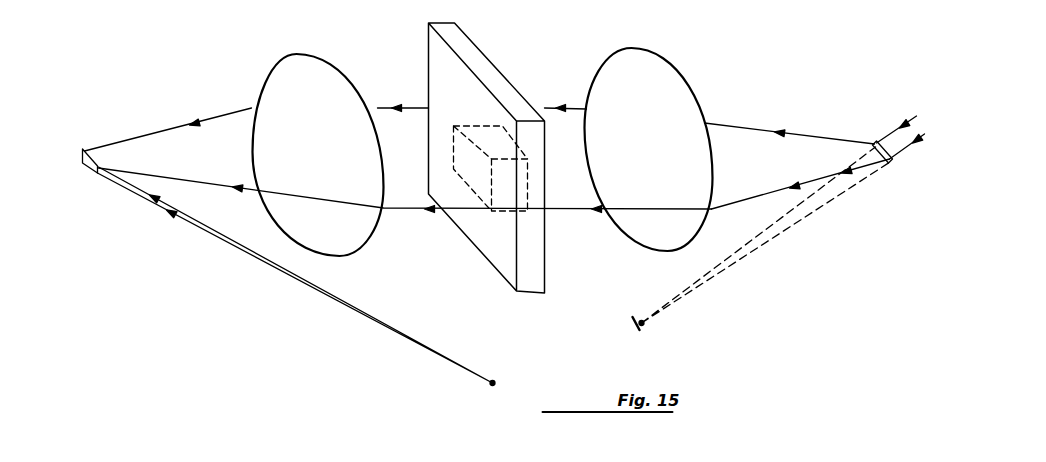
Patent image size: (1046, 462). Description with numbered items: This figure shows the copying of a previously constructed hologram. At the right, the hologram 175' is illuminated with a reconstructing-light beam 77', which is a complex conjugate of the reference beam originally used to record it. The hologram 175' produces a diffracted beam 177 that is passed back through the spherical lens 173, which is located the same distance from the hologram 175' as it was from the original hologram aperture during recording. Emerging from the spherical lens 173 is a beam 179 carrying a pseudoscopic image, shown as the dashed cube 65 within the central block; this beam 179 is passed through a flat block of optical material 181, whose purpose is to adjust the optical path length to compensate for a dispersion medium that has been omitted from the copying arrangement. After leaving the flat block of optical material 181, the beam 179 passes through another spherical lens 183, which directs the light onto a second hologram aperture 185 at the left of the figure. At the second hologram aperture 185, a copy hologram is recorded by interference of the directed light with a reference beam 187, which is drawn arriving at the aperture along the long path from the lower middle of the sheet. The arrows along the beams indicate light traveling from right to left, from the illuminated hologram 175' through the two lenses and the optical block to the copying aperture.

The spherical lens 173 is at (672, 88).
The diffracted beam 177 is at (742, 135).
The beam 179 is at (572, 117).
The flat block of optical material 181 is at (485, 68).
The spherical lens 183 is at (277, 82).
The second hologram aperture 185 is at (85, 147).
The reference beam 187 is at (131, 188).
The object 65 is at (457, 131).
The reconstructing-light beam 77' is at (901, 120).
The hologram 175' is at (895, 174).